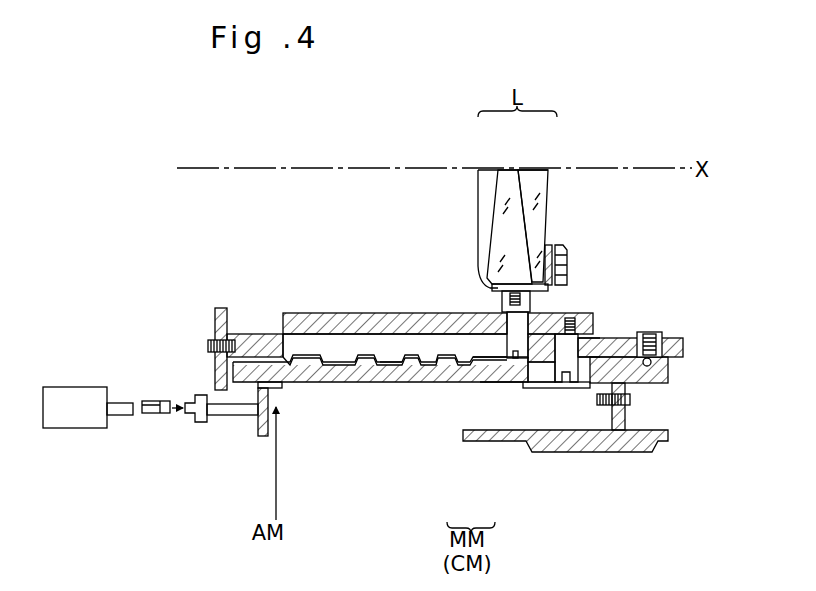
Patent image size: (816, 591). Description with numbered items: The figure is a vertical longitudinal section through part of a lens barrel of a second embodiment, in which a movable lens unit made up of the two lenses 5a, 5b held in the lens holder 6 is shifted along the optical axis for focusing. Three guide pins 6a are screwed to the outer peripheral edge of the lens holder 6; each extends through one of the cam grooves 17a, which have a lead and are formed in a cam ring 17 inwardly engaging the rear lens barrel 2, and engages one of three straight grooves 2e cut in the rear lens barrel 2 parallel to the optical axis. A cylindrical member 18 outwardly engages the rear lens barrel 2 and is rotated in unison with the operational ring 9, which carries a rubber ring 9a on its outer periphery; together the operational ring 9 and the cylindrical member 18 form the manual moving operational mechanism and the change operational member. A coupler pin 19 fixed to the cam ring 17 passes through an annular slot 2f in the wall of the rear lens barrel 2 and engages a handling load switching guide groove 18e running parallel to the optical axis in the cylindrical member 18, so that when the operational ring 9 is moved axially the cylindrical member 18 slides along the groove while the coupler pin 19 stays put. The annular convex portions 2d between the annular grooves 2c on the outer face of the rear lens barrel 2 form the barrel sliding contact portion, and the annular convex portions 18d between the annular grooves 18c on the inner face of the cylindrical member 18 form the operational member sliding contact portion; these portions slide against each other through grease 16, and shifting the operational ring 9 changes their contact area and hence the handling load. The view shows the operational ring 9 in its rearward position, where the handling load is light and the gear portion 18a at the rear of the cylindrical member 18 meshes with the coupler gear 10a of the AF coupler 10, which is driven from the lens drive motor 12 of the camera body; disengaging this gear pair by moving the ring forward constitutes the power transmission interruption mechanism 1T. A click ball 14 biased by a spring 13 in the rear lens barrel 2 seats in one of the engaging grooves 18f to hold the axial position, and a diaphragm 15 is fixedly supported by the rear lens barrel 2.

The rear lens barrel 2 is at (683, 345).
The annular grooves 2c is at (417, 355).
The annular convex portions 2d is at (391, 378).
The straight grooves 2e is at (293, 357).
The annular slot 2f is at (596, 354).
The lens 5a is at (535, 180).
The lens 5b is at (507, 180).
The lens holder 6 is at (478, 168).
The guide pins 6a is at (478, 362).
The operational ring 9 is at (500, 443).
The rubber ring 9a is at (645, 453).
The AF coupler 10 is at (195, 418).
The coupler gear 10a is at (260, 435).
The lens drive motor 12 is at (78, 422).
The spring 13 is at (649, 338).
The click ball 14 is at (652, 364).
The diaphragm 15 is at (566, 238).
The grease 16 is at (347, 363).
The cam ring 17 is at (367, 312).
The cam grooves 17a is at (508, 322).
The cylindrical member 18 is at (493, 385).
The gear portion 18a is at (283, 389).
The annular grooves 18c is at (437, 360).
The annular convex portions 18d is at (328, 342).
The handling load switching guide groove 18e is at (543, 389).
The engaging grooves 18f is at (651, 363).
The coupler pin 19 is at (573, 386).
The image pickup target 1T is at (622, 466).